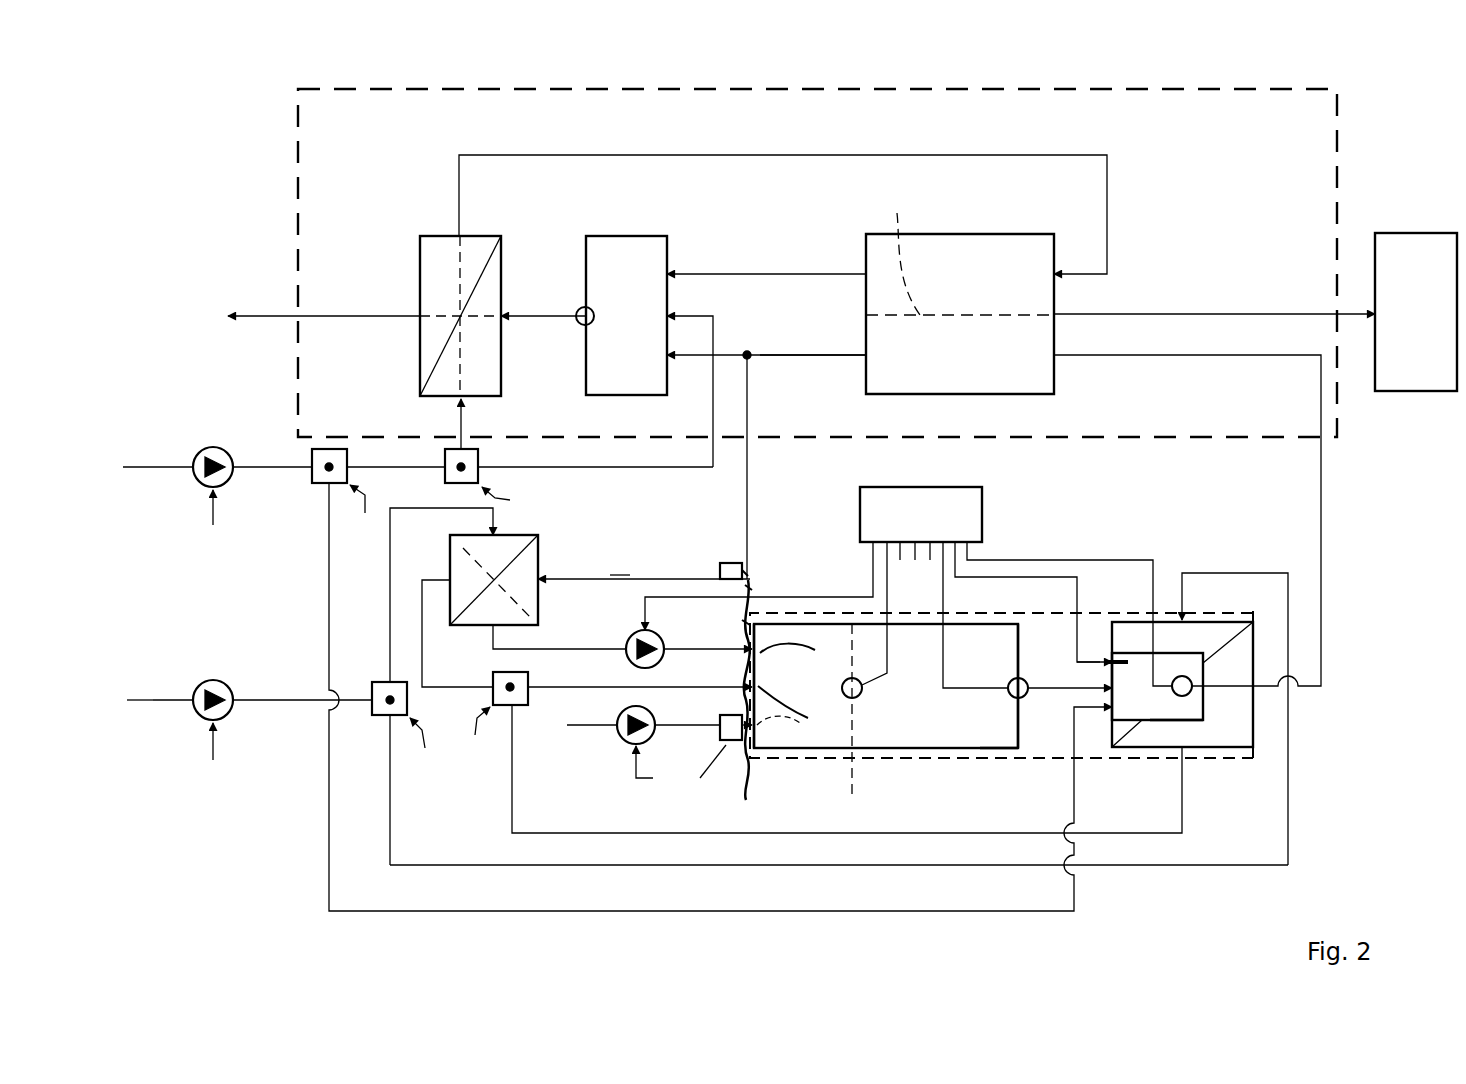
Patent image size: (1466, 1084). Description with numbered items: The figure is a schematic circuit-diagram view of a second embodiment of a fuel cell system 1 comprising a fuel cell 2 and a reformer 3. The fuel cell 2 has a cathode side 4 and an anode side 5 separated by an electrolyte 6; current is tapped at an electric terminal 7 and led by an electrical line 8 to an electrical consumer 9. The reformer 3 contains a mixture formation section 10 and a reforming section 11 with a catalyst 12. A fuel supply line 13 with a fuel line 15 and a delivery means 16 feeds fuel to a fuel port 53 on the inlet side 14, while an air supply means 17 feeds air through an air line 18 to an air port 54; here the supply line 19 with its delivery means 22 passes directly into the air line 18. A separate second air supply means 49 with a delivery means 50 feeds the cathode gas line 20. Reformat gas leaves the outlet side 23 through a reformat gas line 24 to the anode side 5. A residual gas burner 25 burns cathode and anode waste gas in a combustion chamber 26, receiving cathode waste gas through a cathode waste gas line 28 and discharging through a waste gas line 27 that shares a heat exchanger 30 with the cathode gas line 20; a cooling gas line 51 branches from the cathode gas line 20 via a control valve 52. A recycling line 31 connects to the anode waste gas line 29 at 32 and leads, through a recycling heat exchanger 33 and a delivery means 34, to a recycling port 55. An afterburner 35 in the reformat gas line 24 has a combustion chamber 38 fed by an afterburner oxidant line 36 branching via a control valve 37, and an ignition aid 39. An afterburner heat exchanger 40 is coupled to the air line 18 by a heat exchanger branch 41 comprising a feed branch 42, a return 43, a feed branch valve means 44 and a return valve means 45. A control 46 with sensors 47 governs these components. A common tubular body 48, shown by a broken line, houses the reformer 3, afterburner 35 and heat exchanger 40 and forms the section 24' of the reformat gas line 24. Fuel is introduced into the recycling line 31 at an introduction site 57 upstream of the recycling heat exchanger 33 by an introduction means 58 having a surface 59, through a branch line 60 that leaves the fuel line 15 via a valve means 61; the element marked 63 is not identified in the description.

The fuel cell system 1 is at (252, 187).
The fuel cell 2 is at (960, 281).
The reformer 3 is at (888, 748).
The cathode side 4 is at (969, 287).
The anode side 5 is at (969, 366).
The electrolyte 6 is at (901, 251).
The electric terminal 7 is at (1060, 312).
The electrical line 8 is at (1226, 312).
The electrical consumer 9 is at (1425, 324).
The mixture formation section 10 is at (793, 728).
The reforming section 11 is at (953, 727).
The catalyst 12 is at (918, 728).
The fuel supply line 13 is at (606, 733).
The inlet side 14 is at (735, 742).
The fuel line 15 is at (703, 761).
The delivery means 16 is at (655, 716).
The air supply means 17 is at (155, 697).
The air line 18 is at (392, 602).
The supply line 19 is at (258, 695).
The cathode gas line 20 is at (770, 152).
The delivery means 22 is at (210, 678).
The outlet side 23 is at (1018, 748).
The reformat gas line 24 is at (1222, 521).
The reformat gas line section 24' is at (1101, 590).
The residual gas burner 25 is at (641, 281).
The combustion chamber 26 is at (640, 325).
The waste gas line 27 is at (260, 316).
The cathode waste gas line 28 is at (765, 272).
The anode waste gas line 29 is at (805, 358).
The heat exchanger 30 is at (418, 268).
The recycling line 31 is at (640, 578).
The connection point 32 is at (750, 352).
The recycling heat exchanger 33 is at (540, 542).
The delivery means 34 is at (665, 640).
The afterburner 35 is at (1192, 720).
The afterburner oxidant line 36 is at (328, 862).
The control valve 37 is at (308, 485).
The combustion chamber 38 is at (1155, 710).
The ignition aid 39 is at (1120, 656).
The afterburner heat exchanger 40 is at (1255, 730).
The heat exchanger branch 41 is at (1167, 870).
The feed branch 42 is at (1108, 868).
The return 43 is at (587, 833).
The feed branch valve means 44 is at (378, 718).
The return valve means 45 is at (527, 707).
The control 46 is at (937, 527).
The sensors 47 is at (578, 308).
The common tubular body 48 is at (821, 726).
The second air supply means 49 is at (155, 463).
The delivery means 50 is at (210, 445).
The cooling gas line 51 is at (712, 405).
The control valve 52 is at (443, 484).
The fuel port 53 is at (799, 731).
The air port 54 is at (799, 702).
The recycling port 55 is at (807, 650).
The introduction site 57 is at (745, 570).
The introduction means 58 is at (725, 563).
The surface 59 is at (748, 588).
The branch line 60 is at (745, 622).
The valve means 61 is at (740, 790).
The line 63 is at (619, 576).